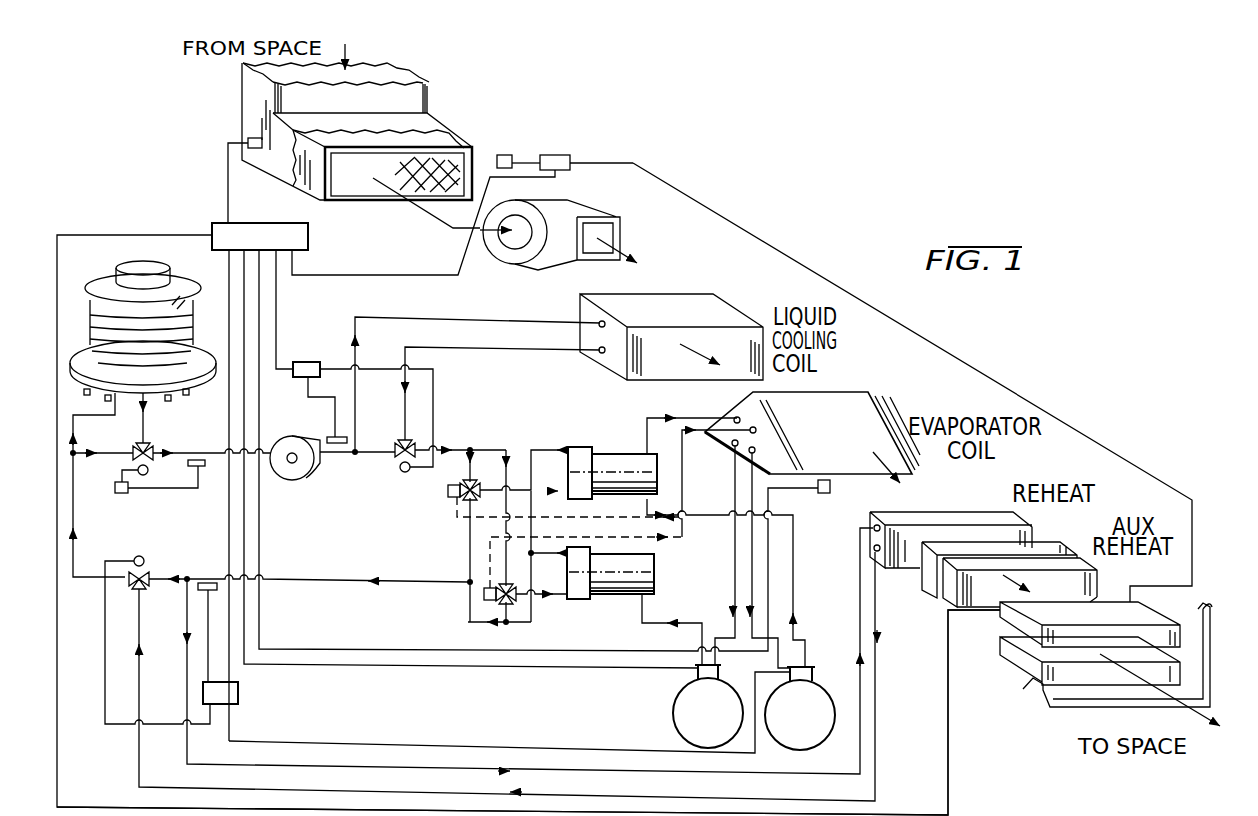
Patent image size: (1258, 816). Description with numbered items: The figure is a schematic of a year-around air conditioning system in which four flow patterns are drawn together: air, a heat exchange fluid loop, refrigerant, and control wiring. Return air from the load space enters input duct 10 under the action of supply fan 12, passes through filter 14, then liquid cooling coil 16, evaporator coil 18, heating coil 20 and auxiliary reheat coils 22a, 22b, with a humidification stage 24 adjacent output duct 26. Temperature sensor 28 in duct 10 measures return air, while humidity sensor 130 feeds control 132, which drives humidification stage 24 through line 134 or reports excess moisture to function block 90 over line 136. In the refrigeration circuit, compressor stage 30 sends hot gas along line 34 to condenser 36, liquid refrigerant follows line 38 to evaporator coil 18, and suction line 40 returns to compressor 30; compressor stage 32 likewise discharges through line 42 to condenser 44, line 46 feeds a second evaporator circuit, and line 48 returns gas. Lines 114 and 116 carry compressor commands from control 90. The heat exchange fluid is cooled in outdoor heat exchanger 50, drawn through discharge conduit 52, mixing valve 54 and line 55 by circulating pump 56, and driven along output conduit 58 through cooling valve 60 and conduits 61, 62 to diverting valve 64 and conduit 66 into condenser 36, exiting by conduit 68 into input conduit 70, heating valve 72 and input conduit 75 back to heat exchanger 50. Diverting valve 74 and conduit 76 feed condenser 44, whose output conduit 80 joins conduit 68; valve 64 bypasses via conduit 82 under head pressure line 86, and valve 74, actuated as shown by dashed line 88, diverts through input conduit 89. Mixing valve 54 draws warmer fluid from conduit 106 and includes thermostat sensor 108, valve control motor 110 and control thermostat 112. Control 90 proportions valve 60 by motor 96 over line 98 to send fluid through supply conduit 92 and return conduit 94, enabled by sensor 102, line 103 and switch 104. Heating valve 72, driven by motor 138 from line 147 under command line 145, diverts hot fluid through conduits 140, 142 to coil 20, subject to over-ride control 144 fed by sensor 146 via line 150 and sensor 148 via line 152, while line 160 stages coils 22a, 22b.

The input duct 10 is at (412, 103).
The supply fan 12 is at (593, 212).
The filter 14 is at (452, 143).
The liquid cooling coil 16 is at (697, 304).
The evaporator coil 18 is at (853, 400).
The heating function coil 20 is at (953, 521).
The auxiliary reheat coil 22a is at (1047, 550).
The auxiliary reheat coil 22b is at (1077, 578).
The humidification stage 24 is at (1007, 647).
The output duct 26 is at (1070, 711).
The temperature sensor 28 is at (250, 138).
The compressor stage 30 is at (812, 726).
The compressor stage 32 is at (720, 724).
The line 34 is at (795, 586).
The condenser 36 is at (631, 457).
The line 38 is at (683, 417).
The line 40 is at (748, 540).
The line 42 is at (655, 621).
The condenser 44 is at (633, 597).
The line 46 is at (683, 491).
The line 48 is at (735, 458).
The heat exchanger 50 is at (112, 272).
The discharge conduit 52 is at (148, 421).
The liquid temperature control valve 54 is at (134, 449).
The line 55 is at (217, 453).
The circulating pump 56 is at (300, 447).
The output conduit 58 is at (324, 461).
The cooling valve 60 is at (398, 462).
The conduit 61 is at (446, 448).
The conduit 62 is at (466, 471).
The diverting valve 64 is at (455, 498).
The conduit 66 is at (516, 462).
The conduit 68 is at (547, 450).
The input conduit 70 is at (330, 578).
The heating valve 72 is at (148, 572).
The diverting valve 74 is at (484, 597).
The input conduit 75 is at (78, 530).
The conduit 76 is at (553, 597).
The output conduit 80 is at (539, 554).
The conduit 82 is at (468, 556).
The pressure input line 86 is at (607, 516).
The dashed line 88 is at (607, 540).
The input conduit 89 is at (508, 618).
The function block 90 is at (222, 228).
The liquid cooling coil supply conduit 92 is at (497, 322).
The conduit 94 is at (512, 349).
The motor 96 is at (410, 476).
The line 98 is at (277, 300).
The sensor 102 is at (332, 437).
The line 103 is at (306, 386).
The switch 104 is at (315, 362).
The conduit 106 is at (101, 438).
The thermostat sensor 108 is at (203, 468).
The valve control motor 110 is at (149, 471).
The control thermostat 112 is at (124, 493).
The line 114 is at (365, 648).
The line 116 is at (390, 665).
The humidity sensor 130 is at (505, 155).
The control 132 is at (562, 155).
The line 134 is at (770, 243).
The line 136 is at (399, 274).
The motor 138 is at (138, 556).
The conduit 140 is at (413, 770).
The conduit 142 is at (592, 798).
The over-ride control 144 is at (240, 697).
The line 145 is at (228, 526).
The sensor 146 is at (212, 580).
The line 147 is at (103, 647).
The sensor 148 is at (830, 489).
The line 150 is at (208, 611).
The line 152 is at (488, 748).
The line 160 is at (950, 779).